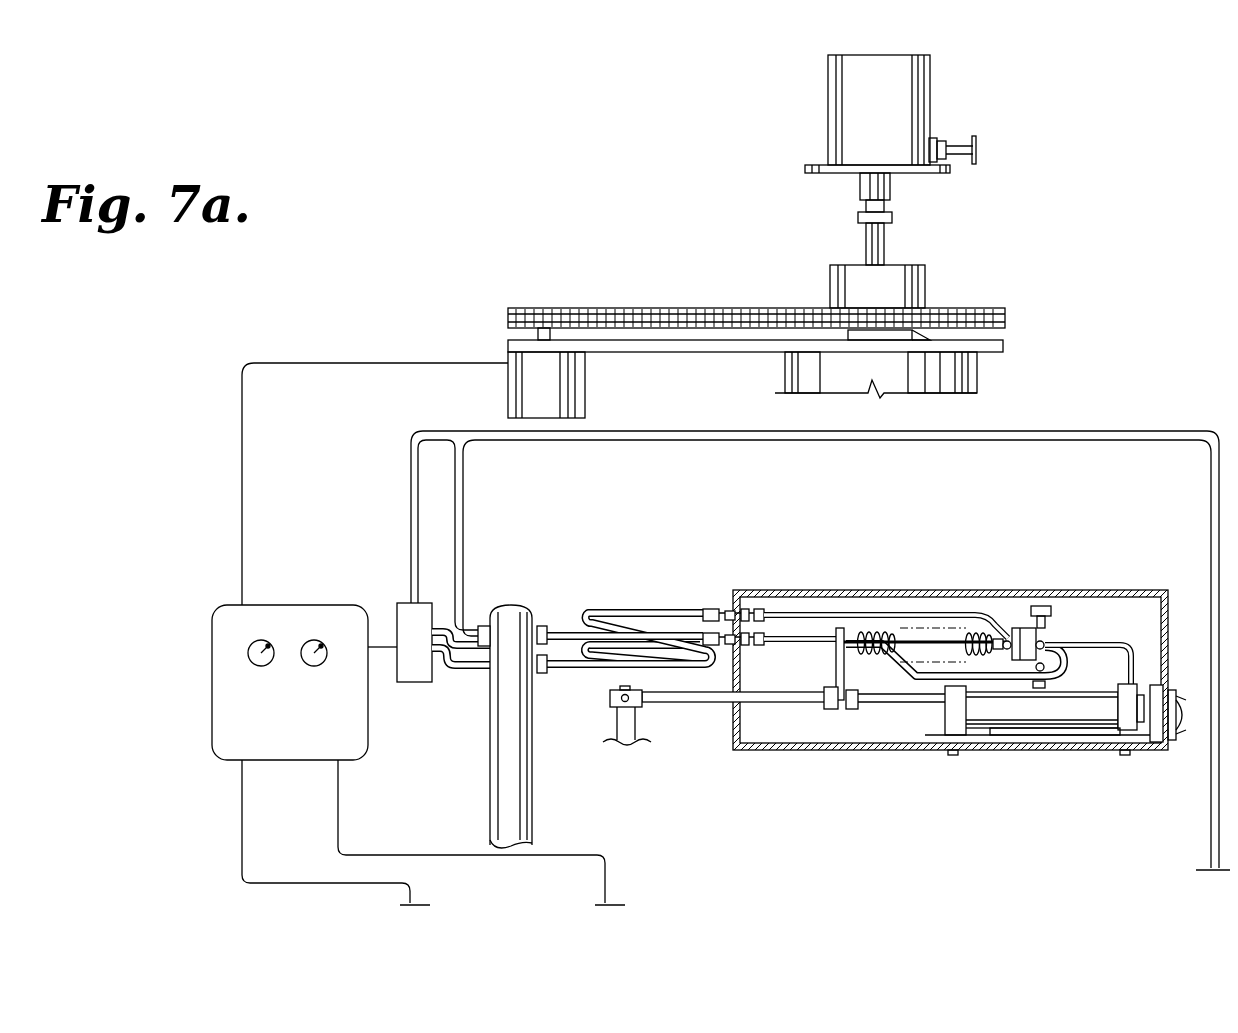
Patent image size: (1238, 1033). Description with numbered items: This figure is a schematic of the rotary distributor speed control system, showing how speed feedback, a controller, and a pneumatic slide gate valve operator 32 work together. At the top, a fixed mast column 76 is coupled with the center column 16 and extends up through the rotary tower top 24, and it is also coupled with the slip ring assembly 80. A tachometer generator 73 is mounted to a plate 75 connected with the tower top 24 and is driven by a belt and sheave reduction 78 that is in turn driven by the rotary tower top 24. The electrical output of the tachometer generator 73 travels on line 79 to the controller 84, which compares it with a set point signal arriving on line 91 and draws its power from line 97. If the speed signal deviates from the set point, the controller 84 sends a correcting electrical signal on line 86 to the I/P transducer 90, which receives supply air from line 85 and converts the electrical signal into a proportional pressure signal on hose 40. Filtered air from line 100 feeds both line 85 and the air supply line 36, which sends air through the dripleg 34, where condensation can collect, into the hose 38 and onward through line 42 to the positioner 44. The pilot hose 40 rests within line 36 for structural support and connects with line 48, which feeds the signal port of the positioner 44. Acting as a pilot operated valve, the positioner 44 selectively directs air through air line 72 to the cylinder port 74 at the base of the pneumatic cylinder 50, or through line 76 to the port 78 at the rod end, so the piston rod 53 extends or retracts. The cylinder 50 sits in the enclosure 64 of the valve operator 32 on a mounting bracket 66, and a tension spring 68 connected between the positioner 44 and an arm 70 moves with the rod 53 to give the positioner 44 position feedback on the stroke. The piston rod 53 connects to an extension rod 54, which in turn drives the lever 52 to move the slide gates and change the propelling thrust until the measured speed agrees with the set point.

The center column 16 is at (919, 313).
The tower top 24 is at (978, 366).
The slide gate valve operator 32 is at (1172, 586).
The dripleg 34 is at (490, 805).
The air supply line 36 is at (469, 625).
The hose 38 is at (556, 630).
The hose 40 is at (440, 670).
The line 42 is at (795, 608).
The positioner 44 is at (1030, 640).
The line 48 is at (790, 646).
The pneumatic cylinder 50 is at (1033, 735).
The lever 52 is at (612, 722).
The piston rod 53 is at (865, 708).
The extension rod 54 is at (718, 705).
The enclosure 64 is at (840, 748).
The mounting bracket 66 is at (940, 748).
The tension spring 68 is at (878, 660).
The arm 70 is at (836, 668).
The air line 72 is at (1131, 655).
The tachometer generator 73 is at (585, 403).
The cylinder port 74 is at (1122, 690).
The plate 75 is at (690, 345).
The line 76 is at (922, 270).
The port 78 is at (703, 312).
The line 79 is at (346, 362).
The slip ring assembly 80 is at (931, 112).
The controller 84 is at (316, 765).
The line 85 is at (410, 519).
The line 86 is at (379, 640).
The I/P transducer 90 is at (432, 682).
The line 91 is at (242, 808).
The line 97 is at (339, 822).
The line 100 is at (563, 443).